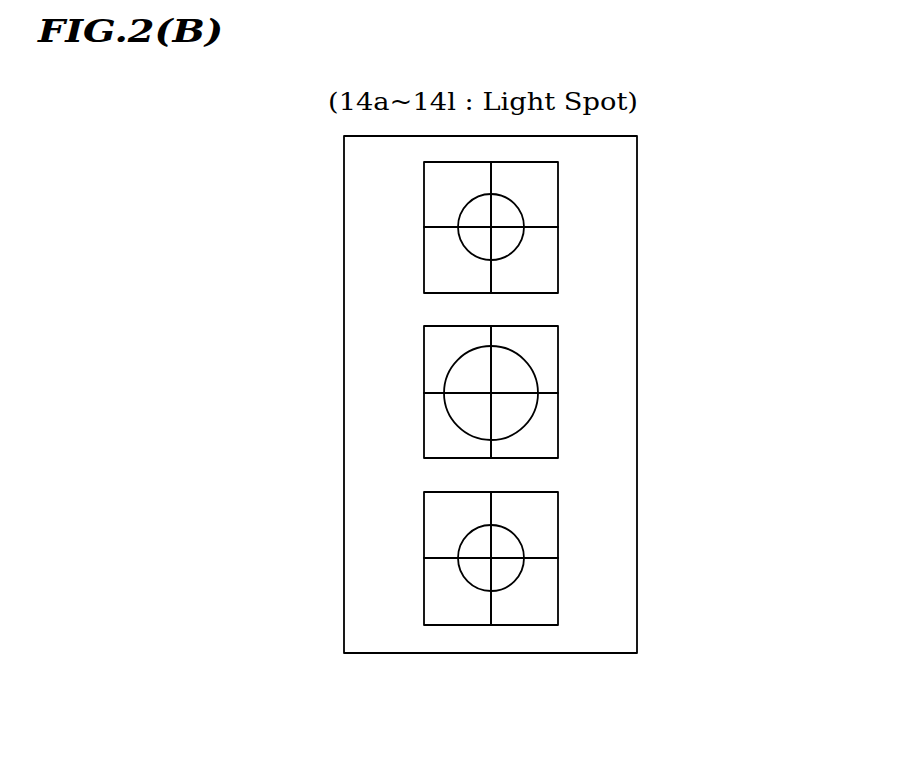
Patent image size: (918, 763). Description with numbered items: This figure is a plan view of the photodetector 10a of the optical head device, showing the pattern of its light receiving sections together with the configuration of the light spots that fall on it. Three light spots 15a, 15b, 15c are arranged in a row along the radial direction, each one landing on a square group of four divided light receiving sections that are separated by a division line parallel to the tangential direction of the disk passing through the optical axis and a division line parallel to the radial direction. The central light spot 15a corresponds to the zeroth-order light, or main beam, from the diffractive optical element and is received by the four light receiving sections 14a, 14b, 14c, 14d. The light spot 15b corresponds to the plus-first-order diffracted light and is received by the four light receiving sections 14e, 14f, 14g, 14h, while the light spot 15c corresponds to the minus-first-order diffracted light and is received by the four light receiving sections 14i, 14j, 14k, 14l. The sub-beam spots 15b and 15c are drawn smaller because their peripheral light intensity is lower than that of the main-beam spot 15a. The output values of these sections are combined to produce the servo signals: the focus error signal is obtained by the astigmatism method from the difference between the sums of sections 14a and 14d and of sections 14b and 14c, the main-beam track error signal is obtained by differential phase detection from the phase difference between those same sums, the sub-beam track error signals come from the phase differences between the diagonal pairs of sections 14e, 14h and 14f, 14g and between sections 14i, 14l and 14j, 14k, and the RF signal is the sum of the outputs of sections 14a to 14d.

The photodetector 10a is at (437, 653).
The light receiving section 14a is at (437, 366).
The light receiving section 14b is at (545, 357).
The light receiving section 14c is at (432, 418).
The light receiving section 14d is at (543, 432).
The light receiving section 14e is at (437, 208).
The light receiving section 14f is at (545, 189).
The light receiving section 14g is at (433, 261).
The light receiving section 14h is at (543, 276).
The light receiving section 14i is at (437, 533).
The light receiving section 14j is at (545, 520).
The light receiving section 14k is at (433, 585).
The light receiving section 14l is at (543, 599).
The light spot 15a is at (530, 402).
The light spot 15b is at (517, 238).
The light spot 15c is at (518, 576).